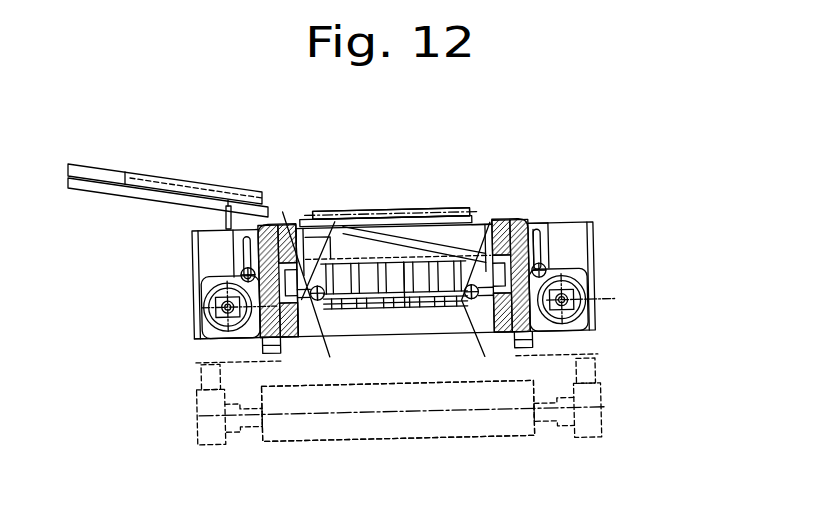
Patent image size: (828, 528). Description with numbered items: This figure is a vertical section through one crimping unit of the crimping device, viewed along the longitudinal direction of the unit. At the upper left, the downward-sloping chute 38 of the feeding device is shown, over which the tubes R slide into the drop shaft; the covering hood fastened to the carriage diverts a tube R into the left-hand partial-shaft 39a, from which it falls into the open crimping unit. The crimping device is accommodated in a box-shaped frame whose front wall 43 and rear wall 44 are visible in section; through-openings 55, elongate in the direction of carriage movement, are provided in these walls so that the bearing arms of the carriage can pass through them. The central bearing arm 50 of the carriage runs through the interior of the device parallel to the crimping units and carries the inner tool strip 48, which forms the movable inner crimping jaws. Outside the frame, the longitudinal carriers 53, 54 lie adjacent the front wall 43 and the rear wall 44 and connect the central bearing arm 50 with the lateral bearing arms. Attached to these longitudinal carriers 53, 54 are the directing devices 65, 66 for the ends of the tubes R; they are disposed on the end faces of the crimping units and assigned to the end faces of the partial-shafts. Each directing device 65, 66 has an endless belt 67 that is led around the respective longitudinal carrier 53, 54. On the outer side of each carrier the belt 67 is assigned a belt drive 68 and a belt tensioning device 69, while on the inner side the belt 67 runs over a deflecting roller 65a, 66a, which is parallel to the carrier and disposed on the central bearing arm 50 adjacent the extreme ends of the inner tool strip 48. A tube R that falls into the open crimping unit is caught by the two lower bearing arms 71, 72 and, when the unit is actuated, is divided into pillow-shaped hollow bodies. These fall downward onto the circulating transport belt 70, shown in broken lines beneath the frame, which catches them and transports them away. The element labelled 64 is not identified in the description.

The chute 38 is at (105, 178).
The tubes R is at (182, 178).
The rear wall 44 is at (285, 223).
The directing device 65 is at (289, 210).
The directing device 66 is at (523, 214).
The partial-shaft 39a is at (335, 257).
The inner tool strip 48 is at (388, 267).
The cover plate 64 is at (407, 213).
The front wall 43 is at (500, 223).
The longitudinal carrier 53 is at (528, 225).
The through-openings 55 is at (538, 262).
The belt tensioning device 69 is at (242, 276).
The belt drive 68 is at (192, 303).
The longitudinal carrier 54 is at (240, 337).
The deflecting roller 65a is at (300, 303).
The deflecting roller 66a is at (470, 306).
The central bearing arm 50 is at (297, 302).
The endless belt 67 is at (313, 305).
The lower bearing arm 72 is at (374, 312).
The lower bearing arm 71 is at (419, 305).
The transport belt 70 is at (497, 387).